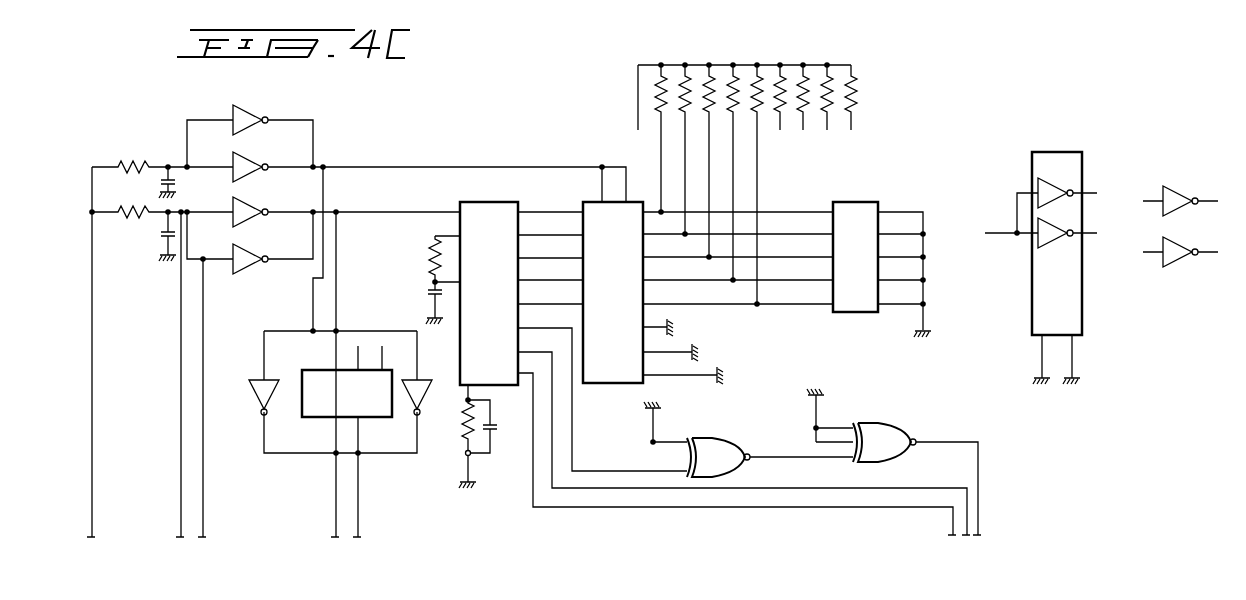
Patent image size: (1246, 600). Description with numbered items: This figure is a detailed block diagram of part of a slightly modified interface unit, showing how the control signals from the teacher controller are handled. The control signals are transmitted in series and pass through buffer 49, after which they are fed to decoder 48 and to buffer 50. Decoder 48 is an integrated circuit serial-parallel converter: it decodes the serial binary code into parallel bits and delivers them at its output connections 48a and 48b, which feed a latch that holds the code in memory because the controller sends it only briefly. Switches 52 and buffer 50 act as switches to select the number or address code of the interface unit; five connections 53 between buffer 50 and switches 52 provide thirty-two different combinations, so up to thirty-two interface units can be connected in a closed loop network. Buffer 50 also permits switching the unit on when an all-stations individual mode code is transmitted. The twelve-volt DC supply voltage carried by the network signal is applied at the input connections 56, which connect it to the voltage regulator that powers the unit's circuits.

The decoder 48 is at (503, 363).
The output connection 48a is at (590, 492).
The output connection 48b is at (533, 477).
The buffer 50 is at (612, 370).
The switches 52 is at (858, 298).
The connections 53 is at (797, 280).
The buffer 49 is at (1075, 288).
The input connections 56 is at (181, 465).